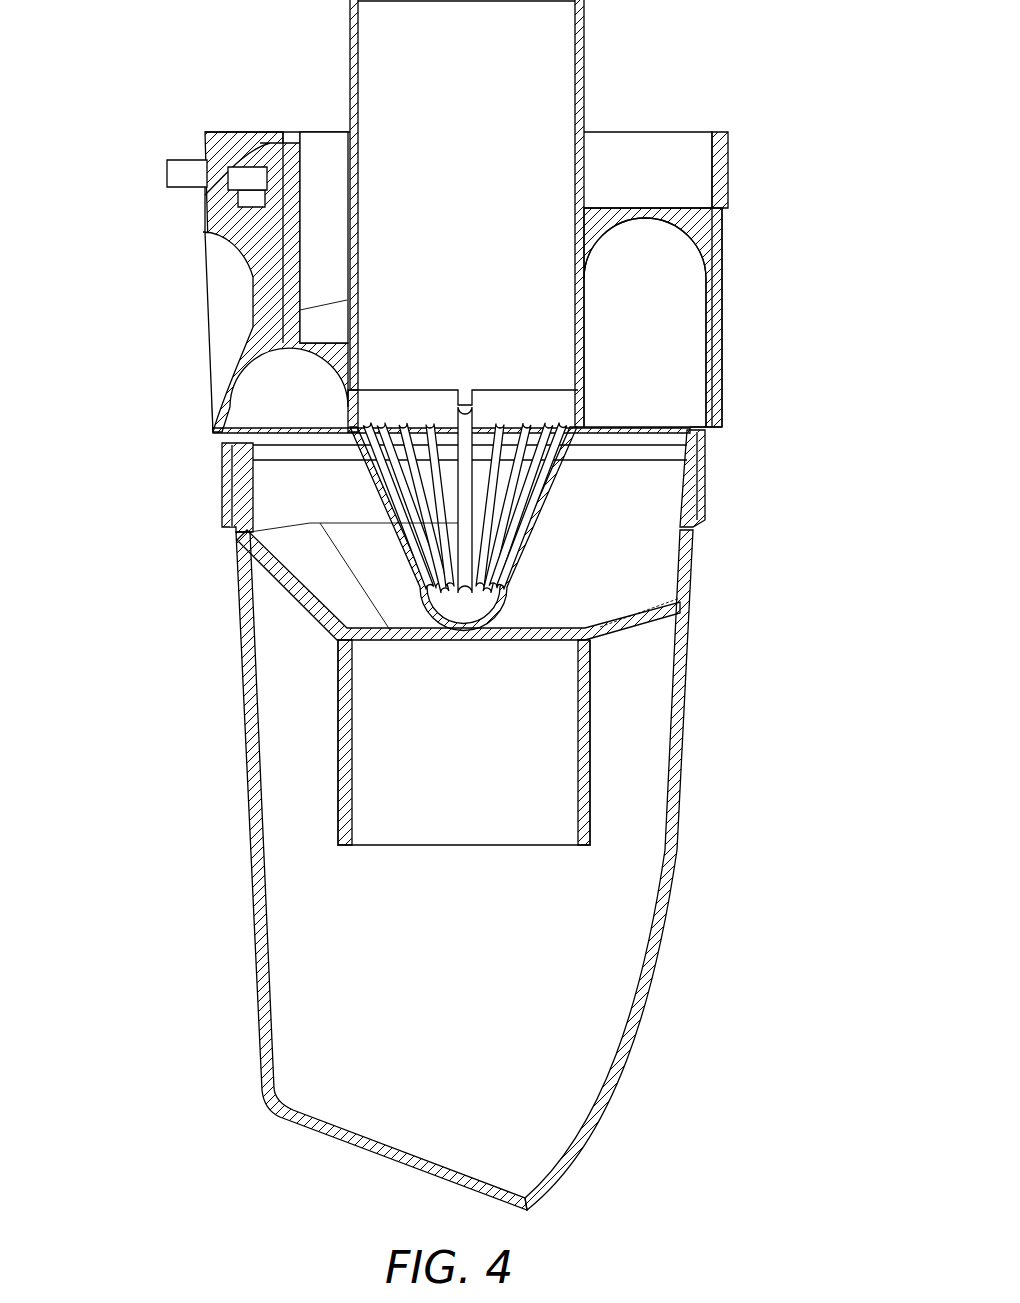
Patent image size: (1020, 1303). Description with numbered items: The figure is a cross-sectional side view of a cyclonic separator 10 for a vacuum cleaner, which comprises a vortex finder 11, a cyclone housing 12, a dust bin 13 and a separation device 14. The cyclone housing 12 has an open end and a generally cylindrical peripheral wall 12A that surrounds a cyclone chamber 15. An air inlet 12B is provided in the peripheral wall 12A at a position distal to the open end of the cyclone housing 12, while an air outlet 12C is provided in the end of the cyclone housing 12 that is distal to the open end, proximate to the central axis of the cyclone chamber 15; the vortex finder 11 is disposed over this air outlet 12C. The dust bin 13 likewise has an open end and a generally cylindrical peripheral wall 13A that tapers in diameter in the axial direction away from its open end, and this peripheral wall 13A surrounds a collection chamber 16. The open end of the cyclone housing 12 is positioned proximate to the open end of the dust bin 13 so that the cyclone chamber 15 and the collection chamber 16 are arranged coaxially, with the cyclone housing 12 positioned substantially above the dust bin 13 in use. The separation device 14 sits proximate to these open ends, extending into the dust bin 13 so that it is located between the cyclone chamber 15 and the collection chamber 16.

The cyclonic separator 10 is at (144, 112).
The vortex finder 11 is at (565, 472).
The cyclone housing 12 is at (720, 210).
The peripheral wall 12A is at (715, 320).
The air inlet 12B is at (257, 220).
The air outlet 12C is at (525, 312).
The dust bin 13 is at (682, 797).
The peripheral wall 13A is at (680, 742).
The separation device 14 is at (243, 533).
The cyclone chamber 15 is at (673, 372).
The collection chamber 16 is at (650, 687).